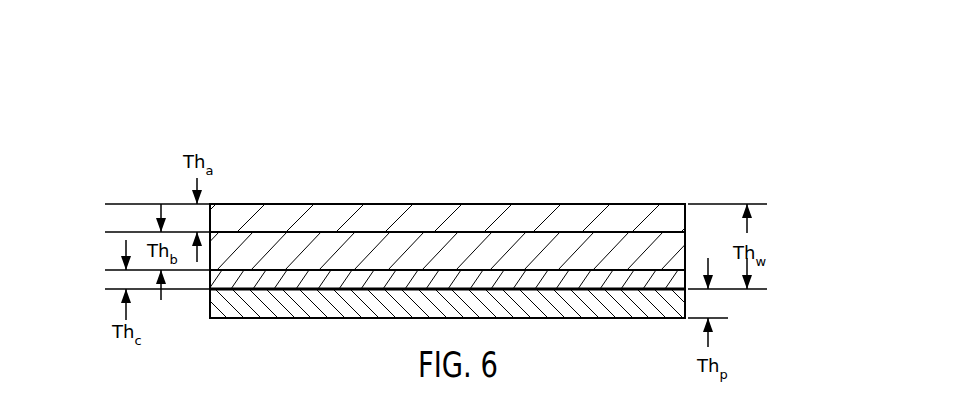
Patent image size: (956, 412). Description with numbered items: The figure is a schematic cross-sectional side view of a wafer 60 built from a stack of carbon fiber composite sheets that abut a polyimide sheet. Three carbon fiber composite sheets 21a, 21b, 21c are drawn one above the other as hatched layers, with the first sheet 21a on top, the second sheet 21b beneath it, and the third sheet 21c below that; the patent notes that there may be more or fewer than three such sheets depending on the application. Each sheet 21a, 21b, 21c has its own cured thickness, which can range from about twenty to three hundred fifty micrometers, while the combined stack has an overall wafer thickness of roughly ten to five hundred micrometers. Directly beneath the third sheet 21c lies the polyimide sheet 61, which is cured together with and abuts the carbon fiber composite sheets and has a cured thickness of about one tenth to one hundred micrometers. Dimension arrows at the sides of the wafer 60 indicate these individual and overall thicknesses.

The wafer 60 is at (171, 112).
The carbon fiber composite sheet 21a is at (287, 212).
The carbon fiber composite sheet 21b is at (363, 242).
The carbon fiber composite sheet 21c is at (330, 280).
The polyimide sheet 61 is at (282, 310).